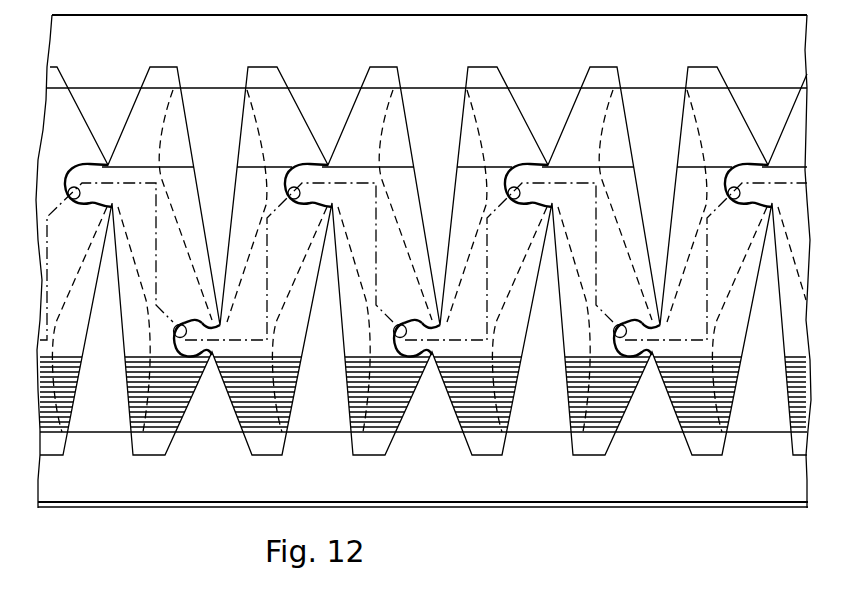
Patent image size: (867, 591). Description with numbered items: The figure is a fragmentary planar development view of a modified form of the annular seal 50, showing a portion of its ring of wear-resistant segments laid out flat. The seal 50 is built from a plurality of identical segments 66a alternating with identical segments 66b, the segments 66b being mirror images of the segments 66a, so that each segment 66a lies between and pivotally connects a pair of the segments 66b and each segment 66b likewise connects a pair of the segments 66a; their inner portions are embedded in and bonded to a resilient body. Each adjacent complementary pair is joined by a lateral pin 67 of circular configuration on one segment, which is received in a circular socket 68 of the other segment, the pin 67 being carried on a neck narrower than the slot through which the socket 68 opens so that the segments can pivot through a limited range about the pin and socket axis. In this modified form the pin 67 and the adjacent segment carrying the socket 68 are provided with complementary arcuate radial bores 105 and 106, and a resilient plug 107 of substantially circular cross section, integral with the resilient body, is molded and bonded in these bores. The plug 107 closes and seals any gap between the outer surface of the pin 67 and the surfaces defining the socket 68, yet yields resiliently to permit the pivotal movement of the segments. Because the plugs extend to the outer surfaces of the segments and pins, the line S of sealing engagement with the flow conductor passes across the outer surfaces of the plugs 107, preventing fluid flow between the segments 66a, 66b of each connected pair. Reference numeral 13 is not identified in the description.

The corrugated panel sheet 13 is at (568, 158).
The annular seal 50 is at (585, 510).
The segments 66a is at (233, 416).
The segments 66b is at (456, 414).
The pin 67 is at (312, 166).
The socket 68 is at (318, 165).
The arcuate radial aperture 105 is at (643, 337).
The arcuate radial aperture 106 is at (623, 327).
The resilient plug 107 is at (177, 326).
The line of sealing engagement S is at (160, 250).